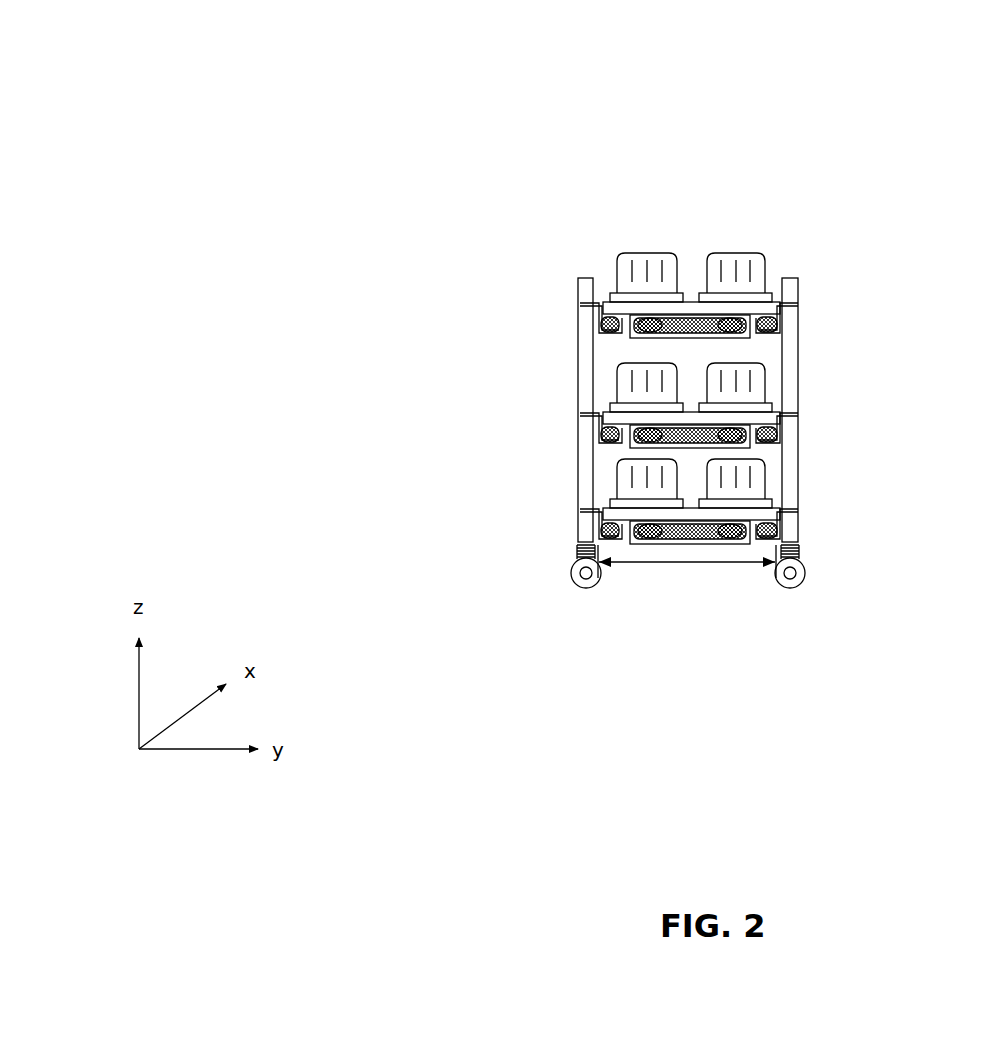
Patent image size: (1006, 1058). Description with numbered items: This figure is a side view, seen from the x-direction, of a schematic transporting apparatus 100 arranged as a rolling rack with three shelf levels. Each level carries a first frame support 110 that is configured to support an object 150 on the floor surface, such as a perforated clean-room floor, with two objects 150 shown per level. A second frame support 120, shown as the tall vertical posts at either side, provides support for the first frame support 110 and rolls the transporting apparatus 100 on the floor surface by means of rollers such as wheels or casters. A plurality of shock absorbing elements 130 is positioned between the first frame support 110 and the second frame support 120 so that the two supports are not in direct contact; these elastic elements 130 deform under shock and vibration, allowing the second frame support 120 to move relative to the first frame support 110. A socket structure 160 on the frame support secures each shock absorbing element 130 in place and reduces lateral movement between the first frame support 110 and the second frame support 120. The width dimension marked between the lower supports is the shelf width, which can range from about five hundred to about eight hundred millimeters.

The transporting apparatus 100 is at (672, 124).
The first frame support 110 is at (760, 307).
The second frame support 120 is at (790, 477).
The shock absorbing element 130 is at (777, 332).
The object 150 is at (737, 270).
The socket structure 160 is at (767, 333).